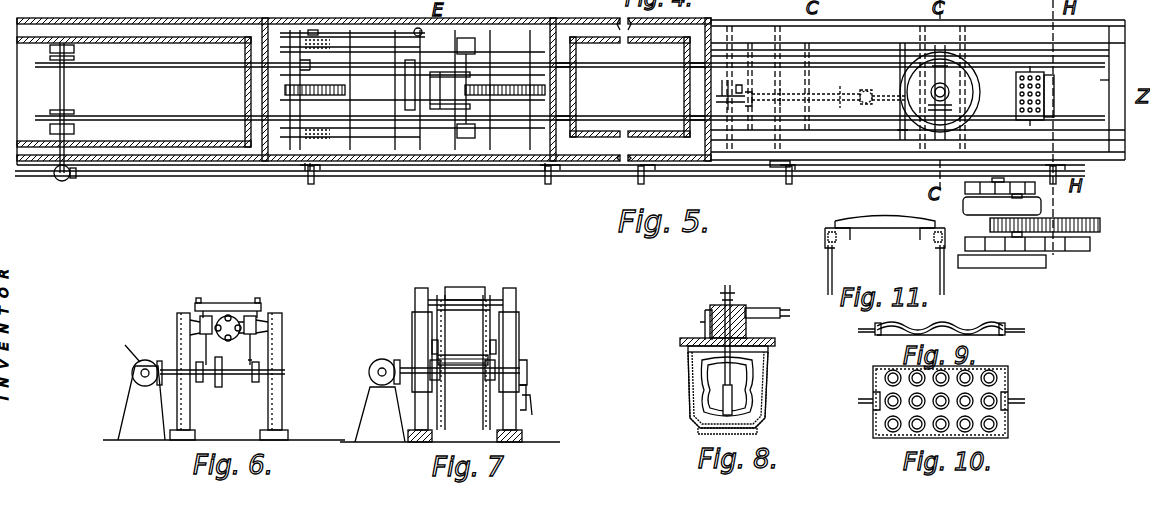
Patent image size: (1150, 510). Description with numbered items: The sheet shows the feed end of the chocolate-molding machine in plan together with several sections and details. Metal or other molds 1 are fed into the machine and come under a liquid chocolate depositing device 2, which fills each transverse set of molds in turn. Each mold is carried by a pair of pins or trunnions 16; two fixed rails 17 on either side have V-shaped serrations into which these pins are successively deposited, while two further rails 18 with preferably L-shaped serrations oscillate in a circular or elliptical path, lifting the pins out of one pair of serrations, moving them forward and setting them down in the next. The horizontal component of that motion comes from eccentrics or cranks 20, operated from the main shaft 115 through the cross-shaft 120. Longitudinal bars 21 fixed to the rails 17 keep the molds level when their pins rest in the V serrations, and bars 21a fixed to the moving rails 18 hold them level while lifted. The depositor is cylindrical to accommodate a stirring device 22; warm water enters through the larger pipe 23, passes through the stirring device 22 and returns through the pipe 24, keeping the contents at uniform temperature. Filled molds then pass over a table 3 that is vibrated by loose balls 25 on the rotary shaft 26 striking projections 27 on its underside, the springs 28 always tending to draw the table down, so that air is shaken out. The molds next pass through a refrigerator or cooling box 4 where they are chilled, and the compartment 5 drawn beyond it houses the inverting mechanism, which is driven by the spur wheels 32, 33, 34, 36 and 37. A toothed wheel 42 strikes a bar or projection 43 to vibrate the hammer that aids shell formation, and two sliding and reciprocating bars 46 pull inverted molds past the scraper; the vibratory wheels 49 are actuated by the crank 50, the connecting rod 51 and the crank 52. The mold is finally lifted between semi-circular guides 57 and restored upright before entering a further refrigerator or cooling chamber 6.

In FIG. 5, the molds 1 is at (1065, 97).
In FIG. 9, the molds 1 is at (910, 326).
In FIG. 10, the molds 1 is at (873, 382).
In FIG. 5, the liquid chocolate depositing device 2 is at (955, 60).
In FIG. 8, the liquid chocolate depositing device 2 is at (752, 370).
In FIG. 5, the table 3 is at (864, 103).
In FIG. 6, the table 3 is at (212, 303).
In FIG. 5, the refrigerator or cooling box 4 is at (630, 87).
In FIG. 5, the compartment 5 is at (412, 90).
In FIG. 5, the refrigerator or cooling chamber 6 is at (134, 92).
In FIG. 10, the pins or trunnions 16 is at (1012, 395).
In FIG. 5, the fixed rails 17 is at (1098, 78).
In FIG. 11, the fixed rails 17 is at (845, 240).
In FIG. 5, the rails 18 is at (818, 64).
In FIG. 11, the rails 18 is at (935, 222).
In FIG. 6, the eccentrics or cranks 20 is at (223, 380).
In FIG. 5, the longitudinal bars 21 is at (990, 118).
In FIG. 11, the longitudinal bars 21 is at (838, 244).
In FIG. 11, the bars 21a is at (856, 240).
In FIG. 8, the stirring device 22 is at (700, 392).
In FIG. 8, the larger pipe 23 is at (740, 395).
In FIG. 8, the pipe 24 is at (732, 290).
In FIG. 5, the loose balls 25 is at (850, 90).
In FIG. 6, the loose balls 25 is at (240, 325).
In FIG. 5, the rotary shaft 26 is at (772, 92).
In FIG. 6, the rotary shaft 26 is at (258, 328).
In FIG. 6, the projections 27 is at (232, 316).
In FIG. 6, the springs 28 is at (200, 326).
In FIG. 5, the spur wheel 32 is at (578, 99).
In FIG. 5, the spur wheel 33 is at (512, 100).
In FIG. 5, the spur wheel 34 is at (298, 70).
In FIG. 5, the spur wheel 36 is at (487, 88).
In FIG. 5, the spur wheel 37 is at (345, 90).
In FIG. 7, the toothed wheel 42 is at (452, 308).
In FIG. 7, the bar or projection 43 is at (470, 303).
In FIG. 7, the sliding and reciprocating bars 46 is at (488, 312).
In FIG. 7, the vibratory wheels 49 is at (445, 410).
In FIG. 7, the crank 50 is at (528, 405).
In FIG. 5, the connecting rod 51 is at (362, 31).
In FIG. 7, the connecting rod 51 is at (528, 390).
In FIG. 5, the crank 52 is at (312, 29).
In FIG. 7, the semi-circular guides 57 is at (440, 286).
In FIG. 5, the main shaft 115 is at (432, 178).
In FIG. 7, the main shaft 115 is at (392, 362).
In FIG. 5, the cross-shaft 120 is at (778, 163).